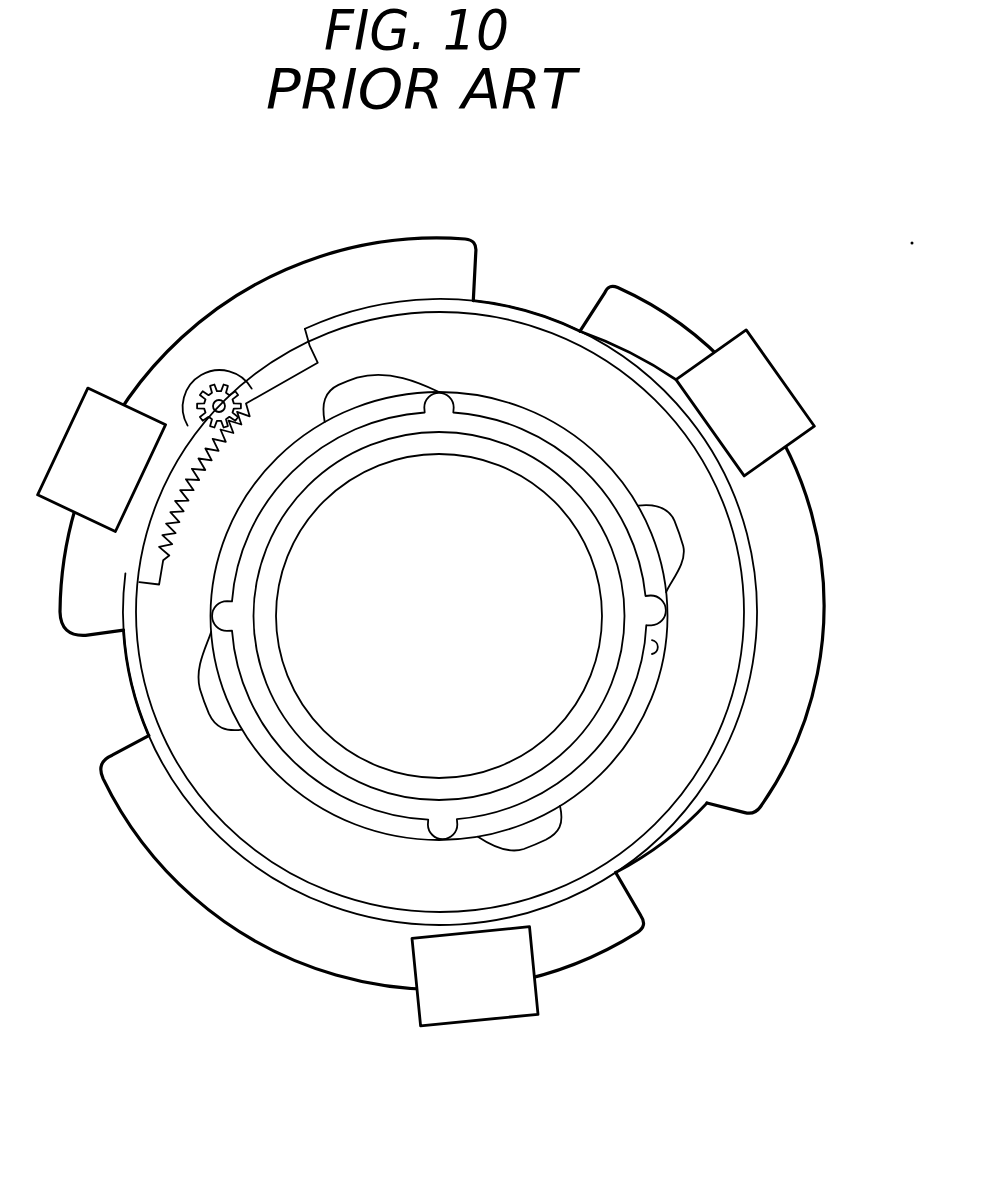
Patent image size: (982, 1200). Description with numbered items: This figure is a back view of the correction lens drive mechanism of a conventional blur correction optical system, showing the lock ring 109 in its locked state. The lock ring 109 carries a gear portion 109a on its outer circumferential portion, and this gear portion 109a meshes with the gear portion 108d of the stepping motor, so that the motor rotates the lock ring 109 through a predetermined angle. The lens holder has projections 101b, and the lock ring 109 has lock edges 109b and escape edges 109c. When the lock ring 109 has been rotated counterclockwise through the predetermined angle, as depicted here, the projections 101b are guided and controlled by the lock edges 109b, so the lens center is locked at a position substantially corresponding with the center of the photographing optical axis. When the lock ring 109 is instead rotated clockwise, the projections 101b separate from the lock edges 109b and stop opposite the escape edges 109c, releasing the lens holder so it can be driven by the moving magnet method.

The lock ring 109 is at (230, 805).
The gear portion 109a is at (197, 437).
The lock edges 109b is at (660, 648).
The escape edges 109c is at (357, 385).
The projections 101b is at (438, 410).
The gear portion 108d is at (212, 398).